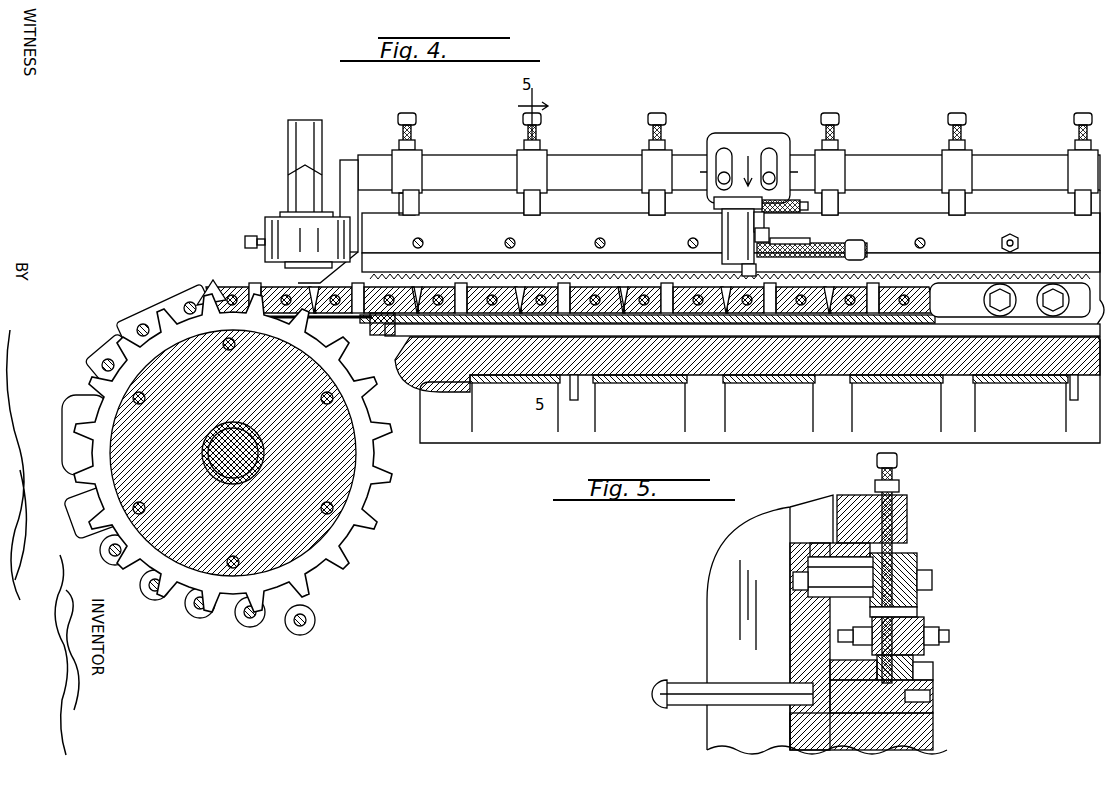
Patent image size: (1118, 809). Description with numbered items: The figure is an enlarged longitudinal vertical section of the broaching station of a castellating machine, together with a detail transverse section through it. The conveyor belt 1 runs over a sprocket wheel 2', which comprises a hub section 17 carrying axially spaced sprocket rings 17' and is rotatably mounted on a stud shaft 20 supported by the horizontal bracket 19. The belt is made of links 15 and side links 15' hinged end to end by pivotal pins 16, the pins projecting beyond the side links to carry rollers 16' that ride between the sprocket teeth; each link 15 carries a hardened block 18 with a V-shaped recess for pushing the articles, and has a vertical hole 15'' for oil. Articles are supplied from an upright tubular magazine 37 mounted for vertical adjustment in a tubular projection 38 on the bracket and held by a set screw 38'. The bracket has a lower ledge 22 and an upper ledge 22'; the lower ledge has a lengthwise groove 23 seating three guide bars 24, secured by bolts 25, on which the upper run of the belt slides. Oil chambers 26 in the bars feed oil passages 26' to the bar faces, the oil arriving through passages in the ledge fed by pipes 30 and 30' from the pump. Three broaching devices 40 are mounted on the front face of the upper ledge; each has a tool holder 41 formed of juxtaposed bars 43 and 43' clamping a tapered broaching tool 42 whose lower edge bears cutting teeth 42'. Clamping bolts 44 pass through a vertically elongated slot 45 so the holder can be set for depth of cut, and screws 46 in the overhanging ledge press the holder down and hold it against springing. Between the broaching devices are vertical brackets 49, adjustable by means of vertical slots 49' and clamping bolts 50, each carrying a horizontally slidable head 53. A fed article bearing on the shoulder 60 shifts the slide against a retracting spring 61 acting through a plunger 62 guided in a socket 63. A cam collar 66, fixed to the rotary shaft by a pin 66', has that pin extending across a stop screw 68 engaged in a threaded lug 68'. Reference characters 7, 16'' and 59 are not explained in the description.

In FIG. 4, the conveyor belt 1 is at (212, 298).
In FIG. 4, the sprocket wheel 2' is at (86, 393).
In FIG. 4, the bracket arm 7 is at (746, 174).
In FIG. 4, the link 15 is at (658, 273).
In FIG. 5, the link 15 is at (914, 622).
In FIG. 4, the link 15' is at (559, 379).
In FIG. 5, the link 15' is at (854, 629).
In FIG. 4, the vertical hole 15'' is at (540, 285).
In FIG. 5, the vertical hole 15'' is at (881, 741).
In FIG. 4, the pivotal pin 16 is at (497, 433).
In FIG. 5, the pivotal pin 16 is at (959, 635).
In FIG. 4, the roller 16' is at (536, 486).
In FIG. 5, the roller 16' is at (948, 625).
In FIG. 5, the pin nut 16'' is at (848, 646).
In FIG. 4, the hub section 17 is at (233, 453).
In FIG. 4, the sprocket ring 17' is at (402, 499).
In FIG. 4, the block 18 is at (242, 287).
In FIG. 5, the block 18 is at (922, 606).
In FIG. 4, the bracket 19 is at (478, 185).
In FIG. 5, the bracket 19 is at (790, 625).
In FIG. 4, the stud shaft 20 is at (228, 470).
In FIG. 4, the lower ledge 22 is at (769, 403).
In FIG. 5, the lower ledge 22 is at (880, 705).
In FIG. 4, the upper ledge 22' is at (816, 402).
In FIG. 5, the upper ledge 22' is at (888, 651).
In FIG. 4, the lengthwise groove 23 is at (1090, 370).
In FIG. 5, the lengthwise groove 23 is at (933, 680).
In FIG. 4, the guide bar 24 is at (622, 340).
In FIG. 5, the guide bar 24 is at (913, 660).
In FIG. 4, the bolt 25 is at (372, 333).
In FIG. 4, the oil chamber 26 is at (720, 372).
In FIG. 5, the oil chamber 26 is at (921, 721).
In FIG. 4, the oil passage 26' is at (607, 371).
In FIG. 5, the oil passage 26' is at (891, 729).
In FIG. 5, the pipe 30 is at (709, 704).
In FIG. 5, the pipe 30' is at (678, 718).
In FIG. 4, the tubular magazine 37 is at (288, 148).
In FIG. 4, the tubular projection 38 is at (295, 231).
In FIG. 4, the set screw 38' is at (240, 237).
In FIG. 4, the broaching device 40 is at (441, 257).
In FIG. 5, the tool holder 41 is at (917, 555).
In FIG. 4, the broaching tool 42 is at (808, 272).
In FIG. 5, the broaching tool 42 is at (938, 569).
In FIG. 4, the cutting teeth 42' is at (783, 284).
In FIG. 4, the clamping bar 43 is at (807, 200).
In FIG. 5, the clamping bar 43 is at (852, 526).
In FIG. 4, the clamping bar 43' is at (1053, 195).
In FIG. 5, the clamping bar 43' is at (962, 569).
In FIG. 4, the clamping bolt 44 is at (594, 243).
In FIG. 5, the clamping bolt 44 is at (793, 582).
In FIG. 5, the vertically elongated slot 45 is at (795, 565).
In FIG. 4, the screw 46 is at (416, 118).
In FIG. 5, the screw 46 is at (897, 503).
In FIG. 4, the vertical bracket 49 is at (748, 157).
In FIG. 4, the vertical slot 49' is at (755, 150).
In FIG. 4, the clamping bolt 50 is at (751, 163).
In FIG. 4, the head 53 is at (768, 234).
In FIG. 4, the serrated rail 59 is at (700, 274).
In FIG. 4, the shoulder 60 is at (762, 272).
In FIG. 4, the retracting spring 61 is at (855, 248).
In FIG. 4, the plunger 62 is at (830, 228).
In FIG. 4, the socket 63 is at (866, 255).
In FIG. 4, the cam collar 66 is at (738, 230).
In FIG. 4, the pin 66' is at (754, 218).
In FIG. 4, the stop screw 68 is at (813, 192).
In FIG. 4, the threaded apertured lug 68' is at (794, 199).